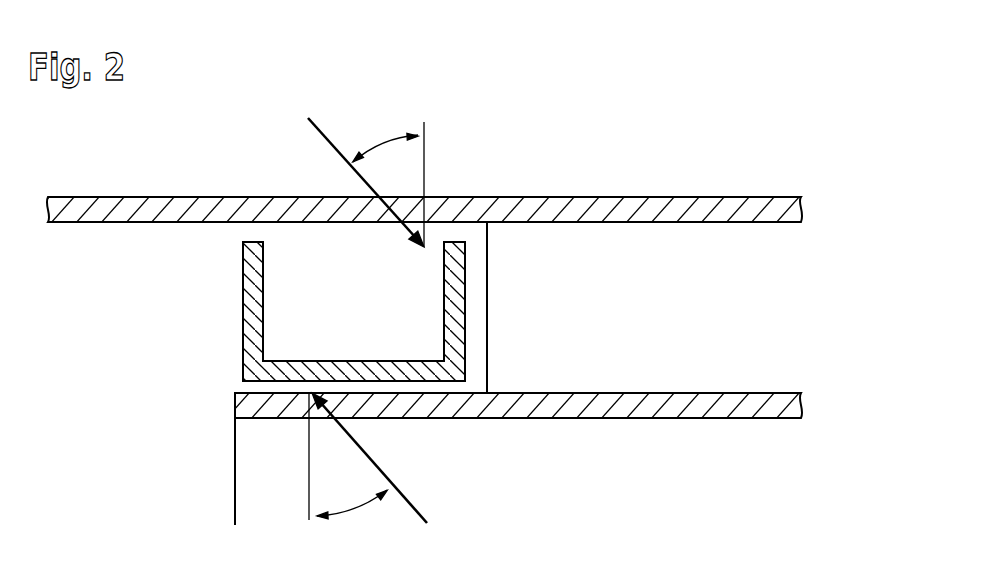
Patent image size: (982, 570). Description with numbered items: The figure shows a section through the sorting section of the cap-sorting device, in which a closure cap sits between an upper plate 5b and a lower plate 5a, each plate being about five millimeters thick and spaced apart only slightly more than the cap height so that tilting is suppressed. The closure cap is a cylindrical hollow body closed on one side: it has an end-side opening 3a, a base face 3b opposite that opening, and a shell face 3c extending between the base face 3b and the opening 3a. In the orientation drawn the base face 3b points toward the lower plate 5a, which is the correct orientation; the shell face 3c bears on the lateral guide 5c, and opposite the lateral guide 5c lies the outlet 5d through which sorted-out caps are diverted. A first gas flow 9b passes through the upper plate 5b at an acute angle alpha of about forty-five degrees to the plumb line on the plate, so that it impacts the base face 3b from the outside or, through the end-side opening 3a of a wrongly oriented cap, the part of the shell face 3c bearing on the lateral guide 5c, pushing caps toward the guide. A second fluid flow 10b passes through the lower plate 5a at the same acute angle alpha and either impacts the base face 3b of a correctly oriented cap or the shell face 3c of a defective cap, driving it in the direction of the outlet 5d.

The end-side opening 3a is at (280, 254).
The base face 3b is at (277, 370).
The shell face 3c is at (248, 264).
The lower plate 5a is at (576, 405).
The upper plate 5b is at (441, 209).
The lateral guide 5c is at (488, 300).
The outlet 5d is at (227, 312).
The first gas flow 9b is at (326, 134).
The second fluid flow 10b is at (380, 468).